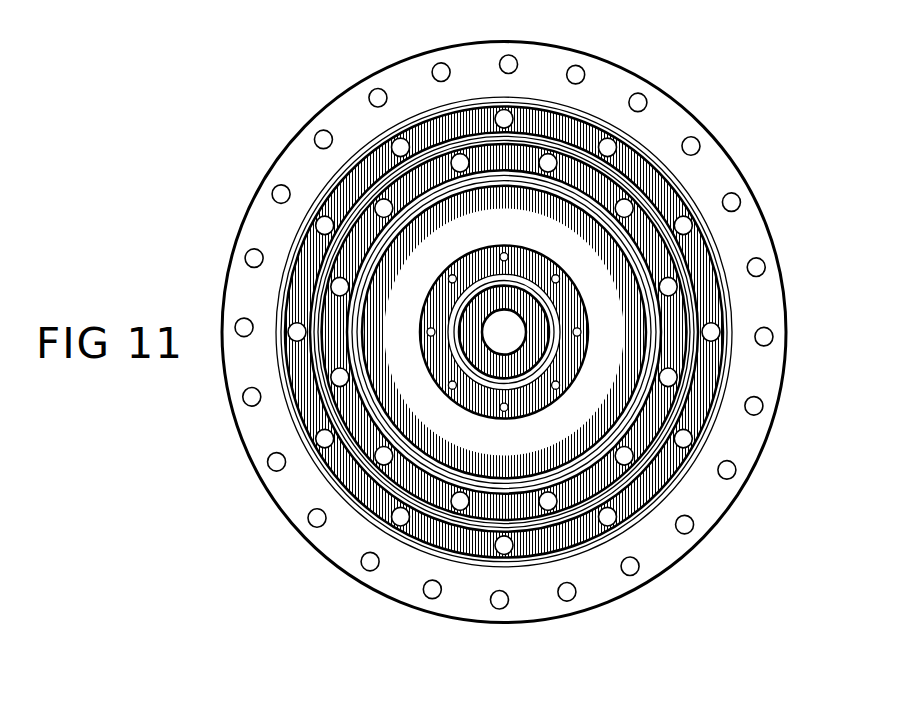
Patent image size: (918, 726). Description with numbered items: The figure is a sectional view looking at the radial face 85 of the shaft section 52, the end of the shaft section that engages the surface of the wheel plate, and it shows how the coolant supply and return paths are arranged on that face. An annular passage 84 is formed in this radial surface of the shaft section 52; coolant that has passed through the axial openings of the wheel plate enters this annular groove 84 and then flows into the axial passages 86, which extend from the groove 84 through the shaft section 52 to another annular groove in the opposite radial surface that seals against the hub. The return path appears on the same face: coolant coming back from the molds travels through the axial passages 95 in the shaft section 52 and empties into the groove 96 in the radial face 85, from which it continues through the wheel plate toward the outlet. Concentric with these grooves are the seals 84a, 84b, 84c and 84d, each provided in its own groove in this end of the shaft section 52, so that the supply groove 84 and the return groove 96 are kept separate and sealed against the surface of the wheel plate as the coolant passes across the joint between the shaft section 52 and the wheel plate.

The shaft section 52 is at (784, 236).
The radial face 85 is at (716, 168).
The annular passage 84 is at (707, 297).
The seal 84a is at (295, 237).
The seal 84b is at (353, 210).
The seal 84c is at (408, 193).
The seal 84d is at (501, 396).
The axial passages 86 is at (697, 235).
The axial passages 95 is at (672, 378).
The groove 96 is at (651, 423).